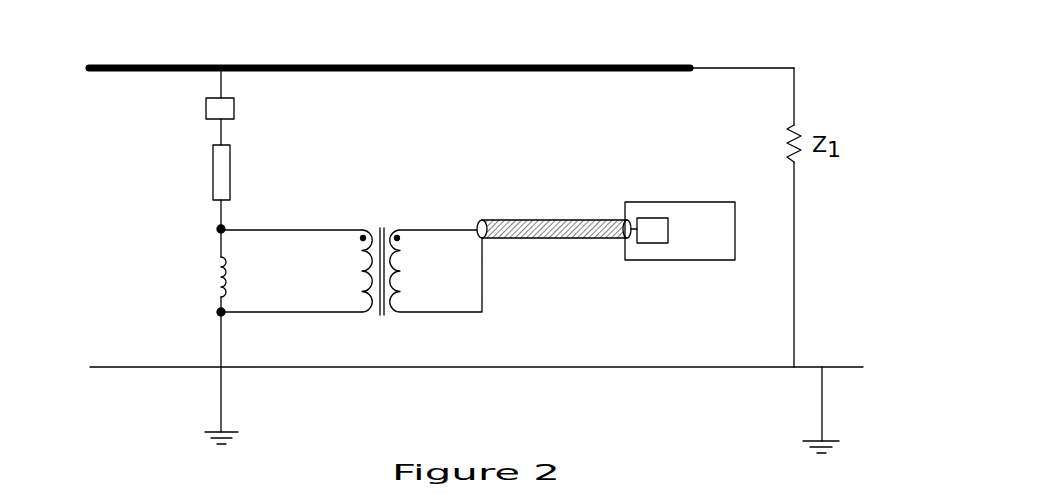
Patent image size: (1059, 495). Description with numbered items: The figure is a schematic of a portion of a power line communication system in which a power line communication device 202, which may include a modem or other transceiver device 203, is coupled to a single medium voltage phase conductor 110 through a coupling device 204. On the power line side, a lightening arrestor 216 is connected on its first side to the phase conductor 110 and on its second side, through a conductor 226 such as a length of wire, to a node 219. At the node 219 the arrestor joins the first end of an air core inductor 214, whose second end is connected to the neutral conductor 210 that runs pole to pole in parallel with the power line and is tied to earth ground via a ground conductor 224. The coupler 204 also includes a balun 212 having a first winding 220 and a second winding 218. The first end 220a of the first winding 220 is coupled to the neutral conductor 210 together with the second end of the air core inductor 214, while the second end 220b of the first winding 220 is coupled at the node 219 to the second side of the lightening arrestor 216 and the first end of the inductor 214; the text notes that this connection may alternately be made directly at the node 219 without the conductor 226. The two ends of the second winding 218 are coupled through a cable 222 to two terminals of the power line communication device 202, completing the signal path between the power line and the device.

The power line phase conductor 110 is at (428, 65).
The coupling device 204 is at (136, 158).
The lightening arrestor 216 is at (236, 107).
The conductor 226 is at (229, 175).
The node 219 is at (219, 227).
The air core inductor 214 is at (218, 262).
The first winding 220 is at (362, 229).
The second end of the first winding 220b is at (254, 231).
The first end of the first winding 220a is at (250, 313).
The balun 212 is at (395, 322).
The second winding 218 is at (401, 230).
The cable 222 is at (521, 218).
The power line communication device 202 is at (649, 202).
The modem or other transceiver device 203 is at (644, 243).
The neutral conductor 210 is at (569, 367).
The ground conductor 224 is at (219, 396).